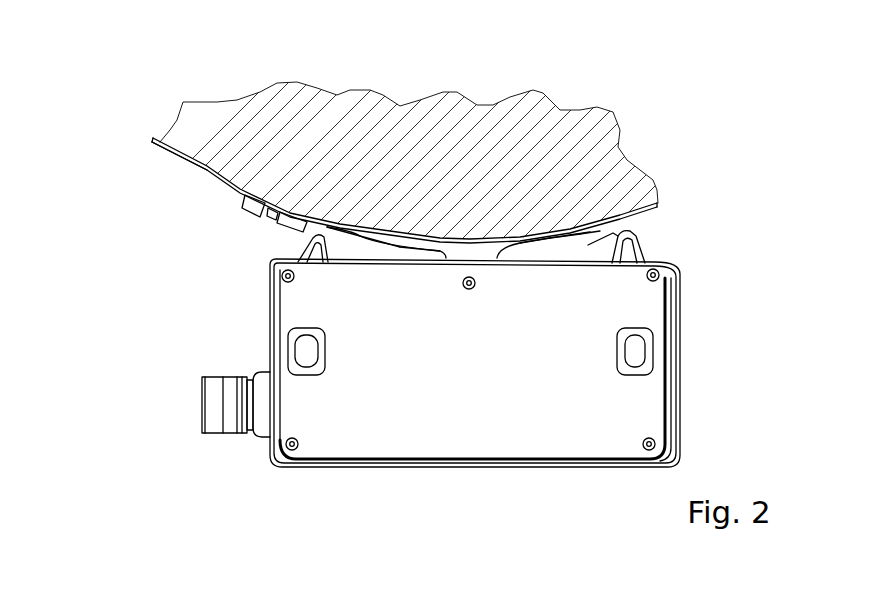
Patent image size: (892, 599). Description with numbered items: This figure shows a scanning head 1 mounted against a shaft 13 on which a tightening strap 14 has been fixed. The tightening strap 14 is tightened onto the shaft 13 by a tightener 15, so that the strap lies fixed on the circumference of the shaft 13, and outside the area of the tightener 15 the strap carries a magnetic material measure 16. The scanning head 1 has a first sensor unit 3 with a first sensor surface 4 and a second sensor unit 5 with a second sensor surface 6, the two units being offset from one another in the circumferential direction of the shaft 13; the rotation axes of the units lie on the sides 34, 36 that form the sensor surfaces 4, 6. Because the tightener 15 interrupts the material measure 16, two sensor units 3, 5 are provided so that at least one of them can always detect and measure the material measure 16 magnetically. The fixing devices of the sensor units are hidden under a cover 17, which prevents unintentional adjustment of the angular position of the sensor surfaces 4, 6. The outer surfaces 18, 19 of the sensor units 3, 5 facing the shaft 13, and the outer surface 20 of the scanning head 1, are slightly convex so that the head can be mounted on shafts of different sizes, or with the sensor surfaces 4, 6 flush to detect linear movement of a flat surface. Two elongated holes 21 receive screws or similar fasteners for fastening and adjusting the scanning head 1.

The scanning head 1 is at (698, 417).
The first sensor unit 3 is at (353, 245).
The first sensor surface 4 is at (393, 240).
The side of the first sensor unit forming the sensor surface 34 is at (383, 128).
The second sensor unit 5 is at (590, 244).
The second sensor surface 6 is at (537, 240).
The side of the second sensor unit forming the sensor surface 36 is at (598, 128).
The shaft 13 is at (448, 147).
The tightening strap 14 is at (213, 202).
The tightener 15 is at (260, 208).
The material measure 16 is at (200, 168).
The cover 17 is at (493, 378).
The outer surface of the first sensor unit 18 is at (372, 238).
The outer surface of the second sensor unit 19 is at (563, 240).
The outer surface of the scanning head 20 is at (460, 260).
The elongated holes 21 is at (308, 355).